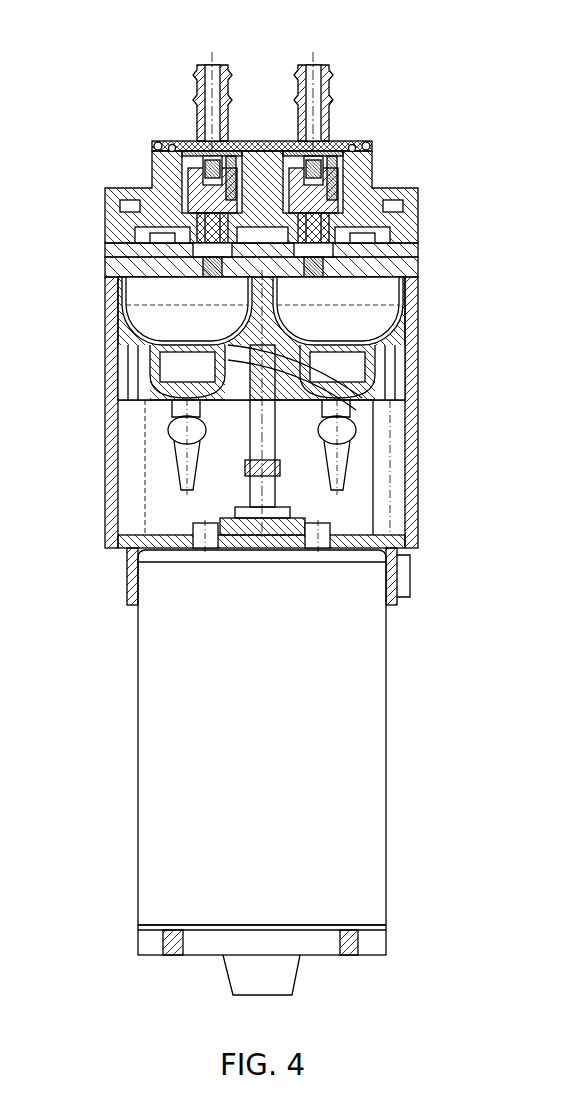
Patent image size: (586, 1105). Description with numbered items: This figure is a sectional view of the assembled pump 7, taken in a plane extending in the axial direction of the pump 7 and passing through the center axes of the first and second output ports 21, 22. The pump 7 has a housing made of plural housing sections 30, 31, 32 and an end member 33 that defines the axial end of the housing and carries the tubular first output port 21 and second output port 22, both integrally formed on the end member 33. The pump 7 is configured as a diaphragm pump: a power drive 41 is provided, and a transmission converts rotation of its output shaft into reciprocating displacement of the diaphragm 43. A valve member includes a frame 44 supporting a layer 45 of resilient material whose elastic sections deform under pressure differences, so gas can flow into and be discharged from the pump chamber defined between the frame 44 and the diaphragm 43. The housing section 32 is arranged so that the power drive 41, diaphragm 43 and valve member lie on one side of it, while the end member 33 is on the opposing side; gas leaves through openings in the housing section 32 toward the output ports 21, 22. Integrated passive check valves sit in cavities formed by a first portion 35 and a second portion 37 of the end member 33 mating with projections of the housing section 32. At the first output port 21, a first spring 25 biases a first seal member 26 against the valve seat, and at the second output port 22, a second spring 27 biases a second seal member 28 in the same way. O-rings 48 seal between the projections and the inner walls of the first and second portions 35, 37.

The pump 7 is at (484, 50).
The first output port 21 is at (327, 66).
The second output port 22 is at (199, 66).
The first spring 25 is at (345, 162).
The first seal member 26 is at (337, 200).
The second spring 27 is at (179, 162).
The second seal member 28 is at (190, 197).
The housing section 30 is at (106, 518).
The housing section 31 is at (106, 360).
The housing section 32 is at (106, 228).
The end member 33 is at (106, 196).
The first portion 35 is at (367, 142).
The second portion 37 is at (158, 141).
The power drive 41 is at (138, 898).
The diaphragm 43 is at (106, 283).
The frame 44 is at (417, 270).
The layer 45 is at (402, 250).
The O-ring 48 is at (172, 148).